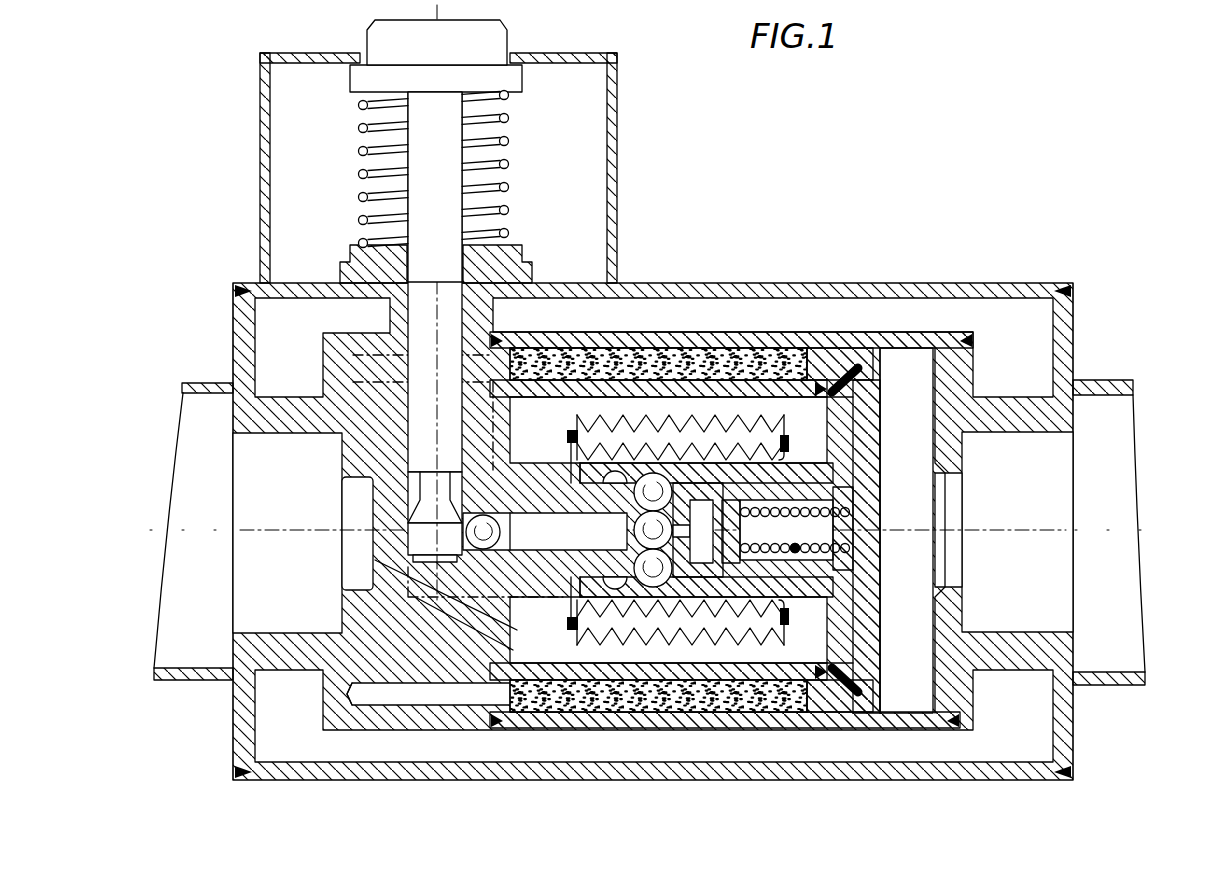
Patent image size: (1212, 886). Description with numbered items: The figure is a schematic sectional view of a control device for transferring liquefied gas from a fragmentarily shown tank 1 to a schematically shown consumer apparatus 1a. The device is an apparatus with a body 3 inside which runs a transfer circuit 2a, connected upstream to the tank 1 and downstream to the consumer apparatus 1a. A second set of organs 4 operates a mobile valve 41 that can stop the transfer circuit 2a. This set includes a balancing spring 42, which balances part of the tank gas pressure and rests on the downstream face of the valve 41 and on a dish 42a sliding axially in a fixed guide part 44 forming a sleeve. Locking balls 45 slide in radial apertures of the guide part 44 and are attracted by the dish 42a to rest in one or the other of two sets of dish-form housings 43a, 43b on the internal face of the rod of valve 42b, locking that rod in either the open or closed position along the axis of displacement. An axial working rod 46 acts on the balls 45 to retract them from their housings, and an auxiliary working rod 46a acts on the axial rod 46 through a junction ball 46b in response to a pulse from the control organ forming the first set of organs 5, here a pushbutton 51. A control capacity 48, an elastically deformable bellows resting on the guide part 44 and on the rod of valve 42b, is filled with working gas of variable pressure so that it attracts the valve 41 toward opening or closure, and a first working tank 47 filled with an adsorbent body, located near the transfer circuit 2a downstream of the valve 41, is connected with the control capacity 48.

The tank 1 is at (1115, 380).
The consumer apparatus 1a is at (210, 383).
The transfer circuit 2a is at (802, 337).
The body 3 is at (723, 473).
The second set of organs 4 is at (688, 473).
The first set of organs 5 is at (545, 98).
The mobile valve 41 is at (908, 385).
The balancing spring 42 is at (883, 518).
The dish 42a is at (798, 549).
The rod of valve 42b is at (766, 407).
The first set of housings 43a is at (652, 473).
The second set of housings 43b is at (615, 473).
The fixed guide part 44 is at (880, 430).
The locking balls 45 is at (645, 548).
The axial working rod 46 is at (532, 540).
The auxiliary working rod 46a is at (412, 158).
The junction ball 46b is at (530, 543).
The first working tank 47 is at (665, 692).
The control capacity 48 is at (632, 627).
The pushbutton 51 is at (487, 43).